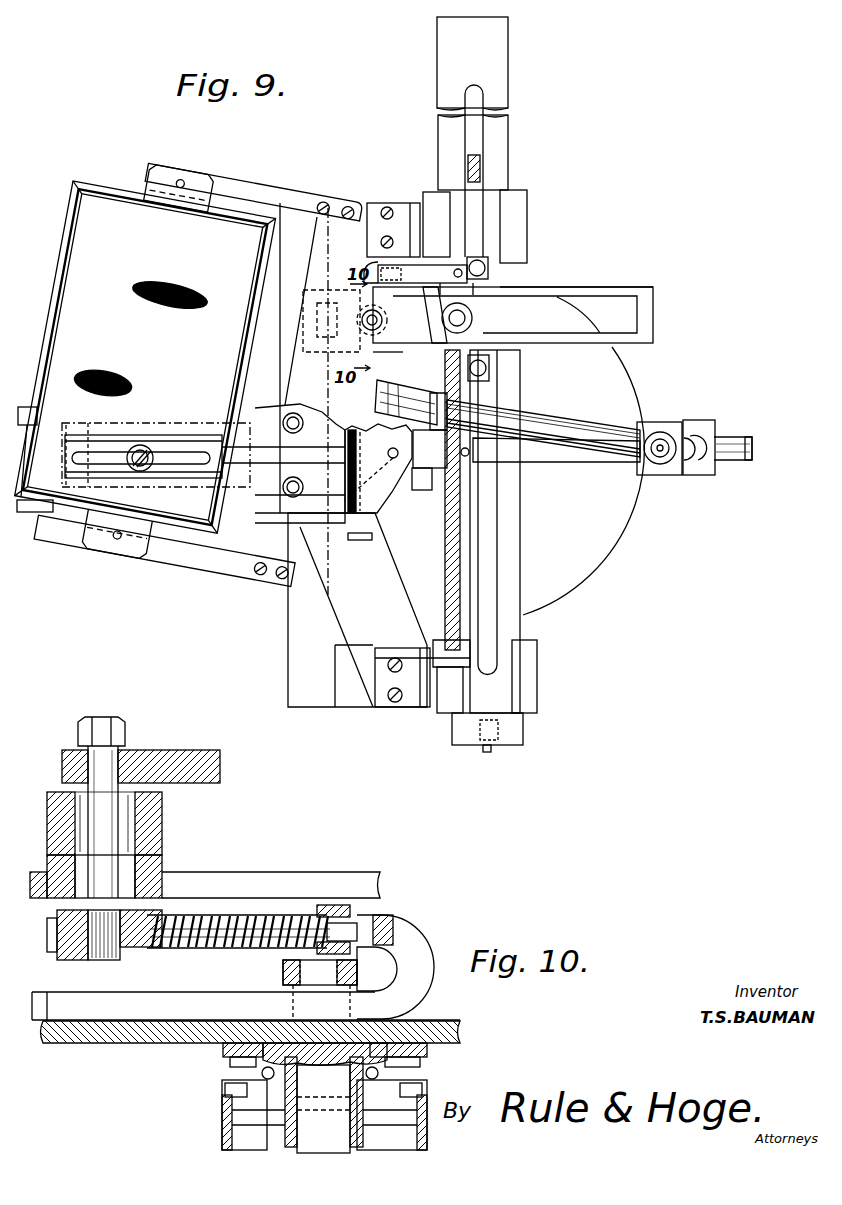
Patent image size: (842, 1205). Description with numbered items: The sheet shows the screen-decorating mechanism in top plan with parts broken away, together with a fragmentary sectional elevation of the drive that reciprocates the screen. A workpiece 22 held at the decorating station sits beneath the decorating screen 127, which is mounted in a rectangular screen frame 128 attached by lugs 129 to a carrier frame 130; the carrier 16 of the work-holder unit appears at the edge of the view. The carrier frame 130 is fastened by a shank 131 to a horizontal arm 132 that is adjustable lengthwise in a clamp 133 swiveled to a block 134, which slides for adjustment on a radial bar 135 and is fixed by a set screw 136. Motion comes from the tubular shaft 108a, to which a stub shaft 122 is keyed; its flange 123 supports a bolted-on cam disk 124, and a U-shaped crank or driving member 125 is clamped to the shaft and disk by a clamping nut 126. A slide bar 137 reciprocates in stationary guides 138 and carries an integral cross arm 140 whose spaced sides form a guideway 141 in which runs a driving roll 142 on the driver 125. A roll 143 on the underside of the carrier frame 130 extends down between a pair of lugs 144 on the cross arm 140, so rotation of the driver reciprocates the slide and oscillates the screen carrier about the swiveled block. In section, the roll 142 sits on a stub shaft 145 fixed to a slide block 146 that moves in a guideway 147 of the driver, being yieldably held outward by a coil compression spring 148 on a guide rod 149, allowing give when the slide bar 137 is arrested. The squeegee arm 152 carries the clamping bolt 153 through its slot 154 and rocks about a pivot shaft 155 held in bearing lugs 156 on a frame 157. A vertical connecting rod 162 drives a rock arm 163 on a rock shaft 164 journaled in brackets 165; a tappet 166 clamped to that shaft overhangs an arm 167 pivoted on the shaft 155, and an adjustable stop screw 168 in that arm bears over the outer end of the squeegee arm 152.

In FIG. 9, the carrier 16 is at (30, 407).
In FIG. 9, the workpiece 22 is at (112, 428).
In FIG. 10, the tubular shaft 108a is at (360, 1150).
In FIG. 10, the stub shaft 122 is at (345, 1038).
In FIG. 10, the flange 123 is at (233, 1048).
In FIG. 9, the cam disk 124 is at (620, 522).
In FIG. 10, the cam disk 124 is at (137, 1037).
In FIG. 9, the U-shaped crank or driving member 125 is at (487, 331).
In FIG. 10, the U-shaped crank or driving member 125 is at (415, 957).
In FIG. 10, the clamping nut 126 is at (283, 976).
In FIG. 9, the decorating screen 127 is at (95, 245).
In FIG. 9, the screen frame 128 is at (113, 188).
In FIG. 9, the lugs 129 is at (193, 184).
In FIG. 9, the carrier frame 130 is at (212, 548).
In FIG. 10, the carrier frame 130 is at (207, 733).
In FIG. 9, the shank 131 is at (422, 398).
In FIG. 9, the horizontal arm 132 is at (602, 432).
In FIG. 9, the clamp 133 is at (668, 423).
In FIG. 9, the block 134 is at (702, 425).
In FIG. 9, the bar 135 is at (743, 458).
In FIG. 9, the set screw 136 is at (717, 442).
In FIG. 9, the slide bar 137 is at (512, 590).
In FIG. 10, the slide bar 137 is at (337, 868).
In FIG. 9, the stationary guides 138 is at (520, 215).
In FIG. 9, the cross arm 140 is at (630, 270).
In FIG. 10, the cross arm 140 is at (148, 873).
In FIG. 9, the guideway 141 is at (625, 317).
In FIG. 9, the driving roll 142 is at (474, 316).
In FIG. 10, the driving roll 142 is at (127, 870).
In FIG. 10, the roll 143 is at (120, 812).
In FIG. 9, the lugs 144 is at (388, 343).
In FIG. 10, the lugs 144 is at (140, 827).
In FIG. 10, the stub shaft 145 is at (100, 950).
In FIG. 10, the slide block 146 is at (153, 960).
In FIG. 10, the guideway 147 is at (260, 917).
In FIG. 10, the coil compression spring 148 is at (240, 915).
In FIG. 10, the guide rod 149 is at (215, 948).
In FIG. 9, the squeegee arm 152 is at (260, 416).
In FIG. 9, the clamping bolt 153 is at (143, 445).
In FIG. 9, the slot 154 is at (177, 452).
In FIG. 9, the pivot shaft 155 is at (356, 541).
In FIG. 9, the bearing lugs 156 is at (308, 560).
In FIG. 9, the frame 157 is at (352, 604).
In FIG. 9, the connecting rod 162 is at (378, 265).
In FIG. 9, the rock arm 163 is at (468, 258).
In FIG. 9, the rock shaft 164 is at (455, 562).
In FIG. 9, the brackets 165 is at (402, 203).
In FIG. 9, the tappet 166 is at (430, 470).
In FIG. 9, the arm 167 is at (408, 490).
In FIG. 9, the stop screw 168 is at (392, 459).